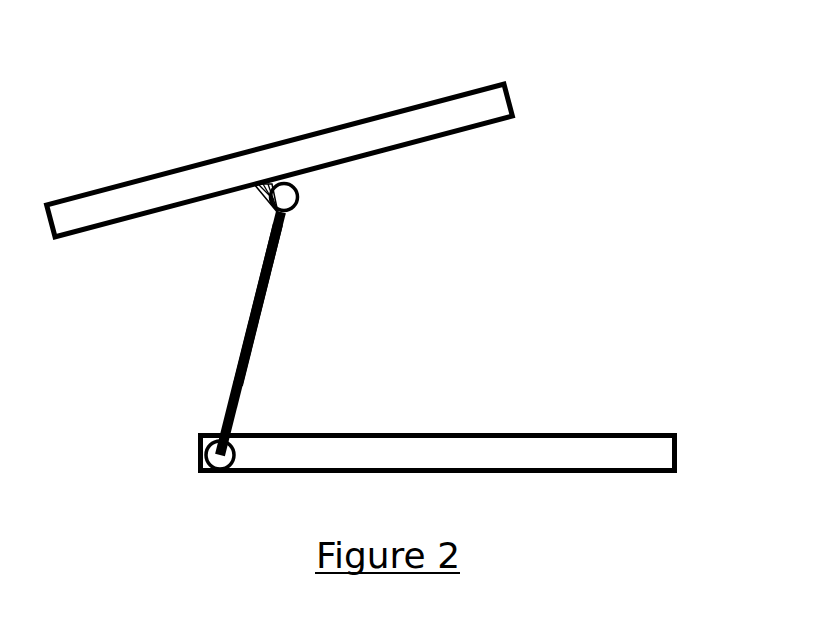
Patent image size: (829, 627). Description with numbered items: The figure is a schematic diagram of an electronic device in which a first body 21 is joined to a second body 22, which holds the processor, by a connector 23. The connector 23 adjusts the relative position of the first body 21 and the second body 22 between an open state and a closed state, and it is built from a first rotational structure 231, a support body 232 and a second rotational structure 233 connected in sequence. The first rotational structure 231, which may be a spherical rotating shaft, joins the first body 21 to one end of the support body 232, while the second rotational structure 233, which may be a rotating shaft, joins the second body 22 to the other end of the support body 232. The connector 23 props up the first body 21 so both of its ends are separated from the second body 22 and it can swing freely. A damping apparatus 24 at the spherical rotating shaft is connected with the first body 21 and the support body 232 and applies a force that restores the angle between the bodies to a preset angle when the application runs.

The first body 21 is at (280, 129).
The second body 22 is at (469, 386).
The connector 23 is at (205, 333).
The first rotational structure 231 is at (367, 212).
The support body 232 is at (343, 304).
The second rotational structure 233 is at (297, 400).
The damping apparatus 24 is at (263, 208).